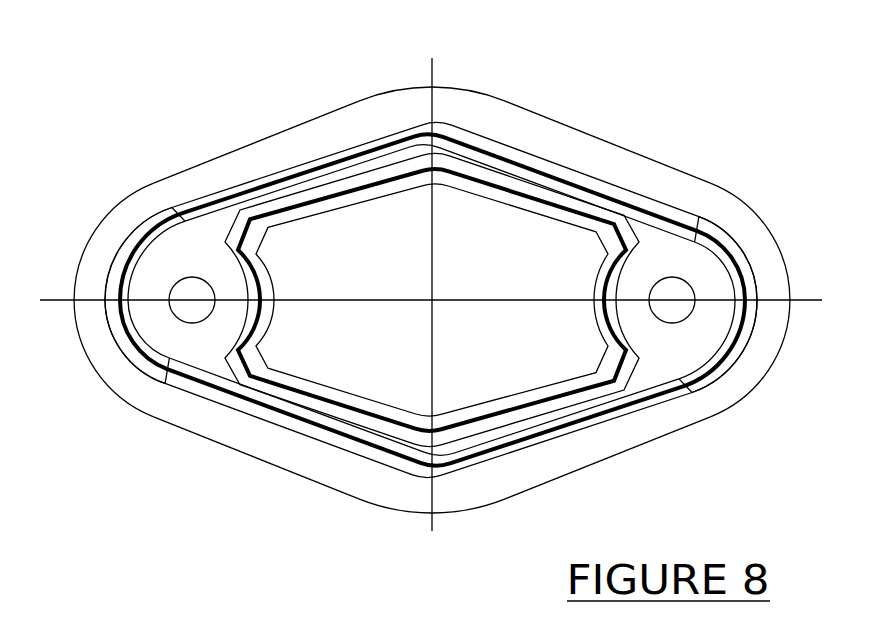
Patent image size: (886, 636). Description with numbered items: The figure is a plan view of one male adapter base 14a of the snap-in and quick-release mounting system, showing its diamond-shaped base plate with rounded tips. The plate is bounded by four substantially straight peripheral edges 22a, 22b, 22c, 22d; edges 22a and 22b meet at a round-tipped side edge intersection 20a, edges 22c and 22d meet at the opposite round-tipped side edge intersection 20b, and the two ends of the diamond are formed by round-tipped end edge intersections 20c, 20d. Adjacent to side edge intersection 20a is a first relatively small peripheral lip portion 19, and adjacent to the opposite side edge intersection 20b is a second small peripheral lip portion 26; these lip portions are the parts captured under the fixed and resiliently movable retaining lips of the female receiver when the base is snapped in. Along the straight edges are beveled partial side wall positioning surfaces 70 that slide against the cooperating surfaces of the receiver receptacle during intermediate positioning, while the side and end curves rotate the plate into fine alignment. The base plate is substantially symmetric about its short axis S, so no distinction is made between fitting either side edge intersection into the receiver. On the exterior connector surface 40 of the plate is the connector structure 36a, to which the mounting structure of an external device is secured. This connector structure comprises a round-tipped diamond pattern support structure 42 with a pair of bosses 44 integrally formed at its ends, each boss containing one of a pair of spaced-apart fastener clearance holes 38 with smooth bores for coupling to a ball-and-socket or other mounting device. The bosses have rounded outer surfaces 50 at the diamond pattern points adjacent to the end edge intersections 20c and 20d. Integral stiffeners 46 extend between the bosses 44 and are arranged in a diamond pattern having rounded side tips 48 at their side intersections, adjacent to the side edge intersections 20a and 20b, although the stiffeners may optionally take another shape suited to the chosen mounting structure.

The male adapter base 14a is at (436, 307).
The first peripheral lip portion 19 is at (436, 307).
The round-tipped side edge intersection 20a is at (425, 87).
The round-tipped side edge intersection 20b is at (418, 513).
The round-tipped end edge intersection 20c is at (788, 327).
The round-tipped end edge intersection 20d is at (77, 268).
The peripheral straight edge 22a is at (600, 139).
The peripheral straight edge 22b is at (256, 133).
The peripheral straight edge 22c is at (222, 441).
The peripheral straight edge 22d is at (568, 470).
The second peripheral lip portion 26 is at (450, 497).
The connector structure 36a is at (436, 302).
The fastener clearance holes 38 is at (687, 291).
The exterior connector surface 40 is at (367, 265).
The diamond pattern support structure 42 is at (603, 199).
The bosses 44 is at (703, 332).
The stiffeners 46 is at (143, 446).
The rounded side tips 48 is at (447, 127).
The rounded outer surfaces 50 is at (758, 290).
The partial side wall positioning surfaces 70 is at (227, 160).
The short axis S is at (433, 522).